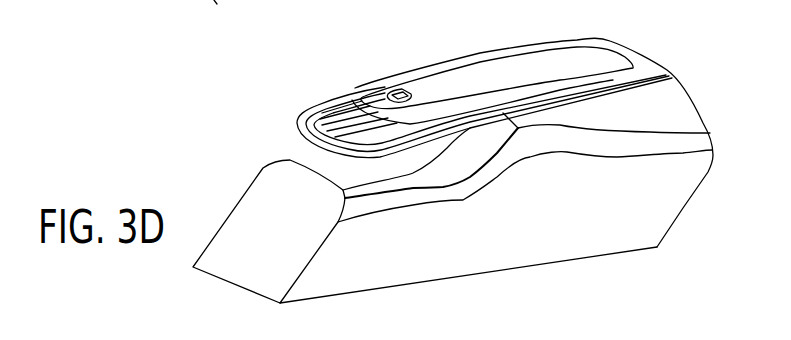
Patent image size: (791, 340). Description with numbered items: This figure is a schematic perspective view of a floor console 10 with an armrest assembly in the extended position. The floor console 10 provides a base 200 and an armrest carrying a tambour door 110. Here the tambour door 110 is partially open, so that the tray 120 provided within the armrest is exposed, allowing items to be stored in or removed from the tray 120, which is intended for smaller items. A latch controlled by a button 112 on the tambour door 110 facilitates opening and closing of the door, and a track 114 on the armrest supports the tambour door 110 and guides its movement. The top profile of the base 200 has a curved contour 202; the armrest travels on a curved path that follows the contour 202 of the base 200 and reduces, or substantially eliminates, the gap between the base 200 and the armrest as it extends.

The floor console 10 is at (703, 72).
The tambour door 110 is at (457, 70).
The button 112 is at (402, 90).
The track 114 is at (323, 110).
The tray 120 is at (355, 130).
The base 200 is at (683, 208).
The curved contour 202 is at (222, 16).